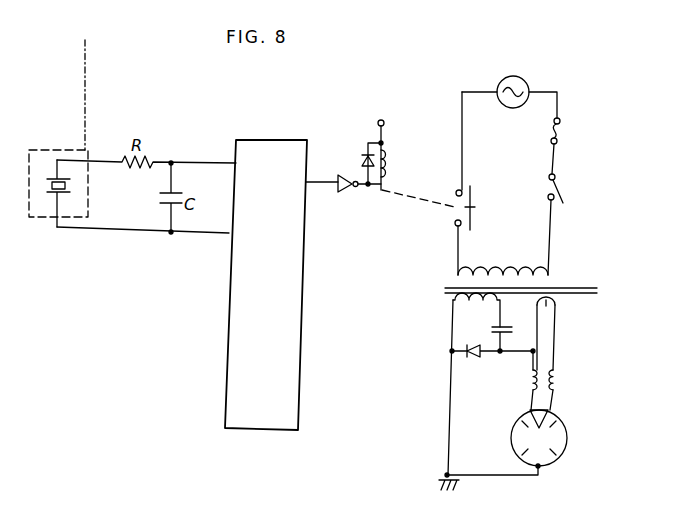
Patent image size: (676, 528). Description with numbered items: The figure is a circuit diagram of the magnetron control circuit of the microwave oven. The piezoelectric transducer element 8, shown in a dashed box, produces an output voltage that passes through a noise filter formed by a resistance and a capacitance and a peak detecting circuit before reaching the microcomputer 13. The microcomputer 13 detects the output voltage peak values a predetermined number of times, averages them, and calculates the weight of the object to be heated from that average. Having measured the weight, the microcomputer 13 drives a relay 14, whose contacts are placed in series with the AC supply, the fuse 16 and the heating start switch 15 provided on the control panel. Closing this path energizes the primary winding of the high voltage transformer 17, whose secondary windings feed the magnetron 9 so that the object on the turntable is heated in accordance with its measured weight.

The piezoelectric transducer element 8 is at (45, 150).
The magnetron 9 is at (568, 421).
The microcomputer 13 is at (282, 432).
The relay 14 is at (389, 152).
The heating start switch 15 is at (563, 182).
The fuse 16 is at (563, 131).
The high voltage transformer 17 is at (562, 302).